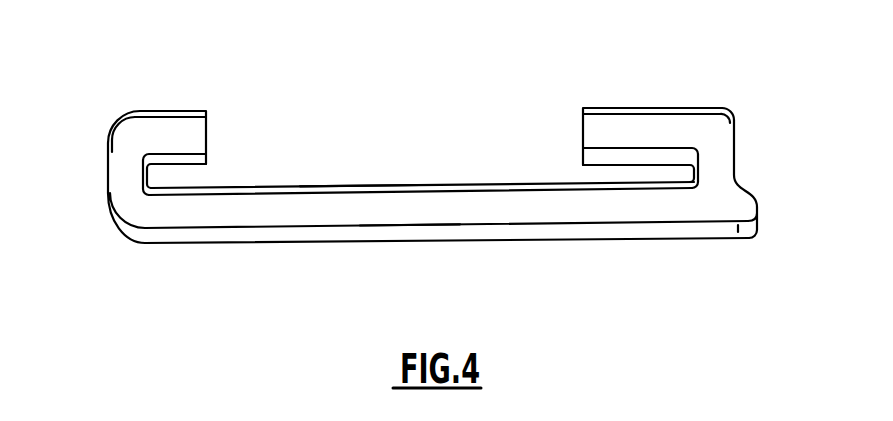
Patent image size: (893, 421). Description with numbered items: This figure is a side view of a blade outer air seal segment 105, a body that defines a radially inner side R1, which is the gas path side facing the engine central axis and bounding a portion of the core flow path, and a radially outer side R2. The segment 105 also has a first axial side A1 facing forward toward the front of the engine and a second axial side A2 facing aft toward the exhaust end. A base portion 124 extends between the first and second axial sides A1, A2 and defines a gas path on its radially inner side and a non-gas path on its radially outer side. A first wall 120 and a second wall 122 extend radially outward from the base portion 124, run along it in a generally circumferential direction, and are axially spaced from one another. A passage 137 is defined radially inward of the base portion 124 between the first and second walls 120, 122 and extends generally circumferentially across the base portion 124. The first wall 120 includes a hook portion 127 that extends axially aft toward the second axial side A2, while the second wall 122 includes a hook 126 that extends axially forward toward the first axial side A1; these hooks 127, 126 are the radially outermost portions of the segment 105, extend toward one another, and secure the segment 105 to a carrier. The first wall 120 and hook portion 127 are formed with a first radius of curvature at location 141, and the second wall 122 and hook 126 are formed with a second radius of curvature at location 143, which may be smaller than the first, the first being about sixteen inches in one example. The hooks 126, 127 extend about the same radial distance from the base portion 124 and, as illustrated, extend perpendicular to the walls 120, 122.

The seal segment 105 is at (429, 161).
The first wall 120 is at (127, 167).
The second wall 122 is at (715, 162).
The base portion 124 is at (467, 208).
The hook 126 is at (626, 127).
The hook portion 127 is at (173, 130).
The passage 137 is at (603, 172).
The location of first radius of curvature 141 is at (123, 115).
The location of second radius of curvature 143 is at (732, 112).
The first axial side A1 is at (106, 190).
The second axial side A2 is at (757, 207).
The radially inner side R1 is at (403, 227).
The radially outer side R2 is at (353, 187).